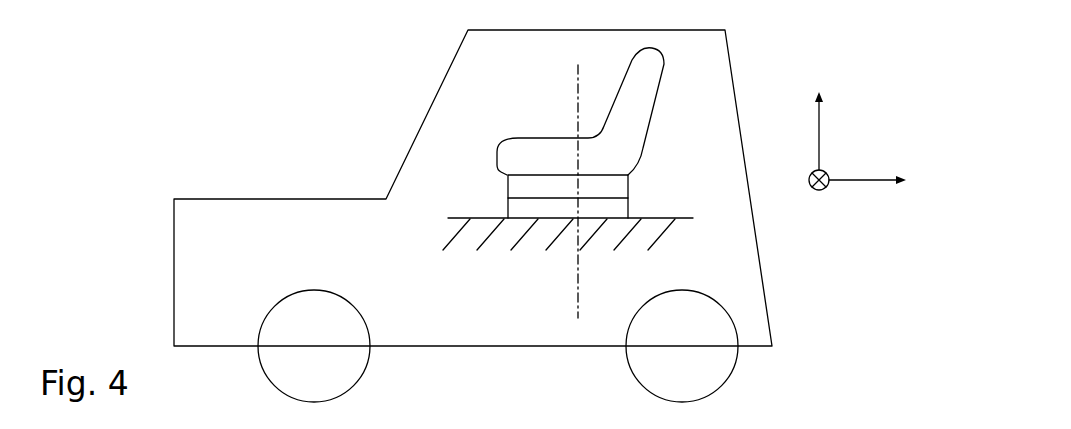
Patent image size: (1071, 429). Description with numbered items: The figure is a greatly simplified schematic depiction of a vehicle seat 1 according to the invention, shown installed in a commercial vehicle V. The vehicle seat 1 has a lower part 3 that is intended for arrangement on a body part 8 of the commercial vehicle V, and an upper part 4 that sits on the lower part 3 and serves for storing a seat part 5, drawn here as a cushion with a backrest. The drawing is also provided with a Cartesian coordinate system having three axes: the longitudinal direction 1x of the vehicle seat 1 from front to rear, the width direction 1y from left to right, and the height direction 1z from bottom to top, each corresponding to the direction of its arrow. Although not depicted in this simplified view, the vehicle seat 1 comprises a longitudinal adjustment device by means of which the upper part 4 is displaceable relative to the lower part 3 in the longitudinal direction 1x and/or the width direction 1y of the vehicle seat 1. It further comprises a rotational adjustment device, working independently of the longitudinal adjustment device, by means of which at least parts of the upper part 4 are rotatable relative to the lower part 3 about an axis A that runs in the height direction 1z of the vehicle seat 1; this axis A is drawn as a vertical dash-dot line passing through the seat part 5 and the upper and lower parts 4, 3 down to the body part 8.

The vehicle seat 1 is at (570, 130).
The lower part 3 is at (508, 212).
The upper part 4 is at (508, 190).
The seat part 5 is at (533, 148).
The body part 8 is at (668, 218).
The commercial vehicle V is at (265, 170).
The axis A is at (577, 303).
The longitudinal direction 1x is at (865, 177).
The width direction 1y is at (811, 189).
The height direction 1z is at (817, 130).